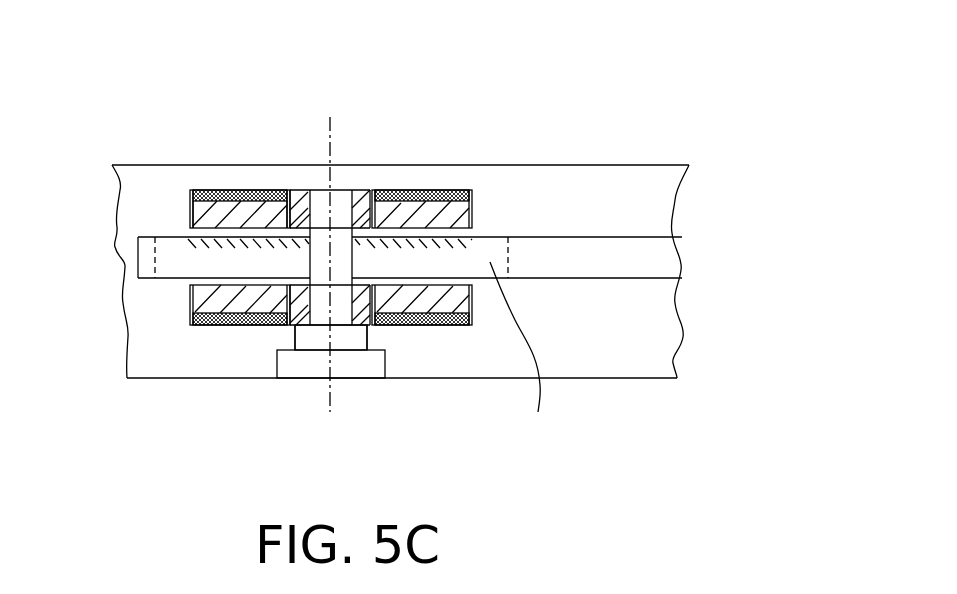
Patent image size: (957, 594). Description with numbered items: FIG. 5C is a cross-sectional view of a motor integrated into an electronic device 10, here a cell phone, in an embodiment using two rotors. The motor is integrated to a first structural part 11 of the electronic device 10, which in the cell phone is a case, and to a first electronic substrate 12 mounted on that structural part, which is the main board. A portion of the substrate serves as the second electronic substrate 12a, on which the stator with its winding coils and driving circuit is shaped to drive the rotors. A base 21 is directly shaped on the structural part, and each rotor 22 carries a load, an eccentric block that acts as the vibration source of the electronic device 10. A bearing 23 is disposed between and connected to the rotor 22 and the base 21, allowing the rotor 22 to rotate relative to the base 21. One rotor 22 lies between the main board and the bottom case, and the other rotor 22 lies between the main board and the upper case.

The electronic device 10 is at (678, 98).
The first structural part 11 is at (437, 379).
The first electronic substrate 12 is at (145, 257).
The second electronic substrate 12a is at (524, 351).
The base 21 is at (290, 339).
The rotor 22 is at (182, 199).
The bearing 23 is at (358, 192).